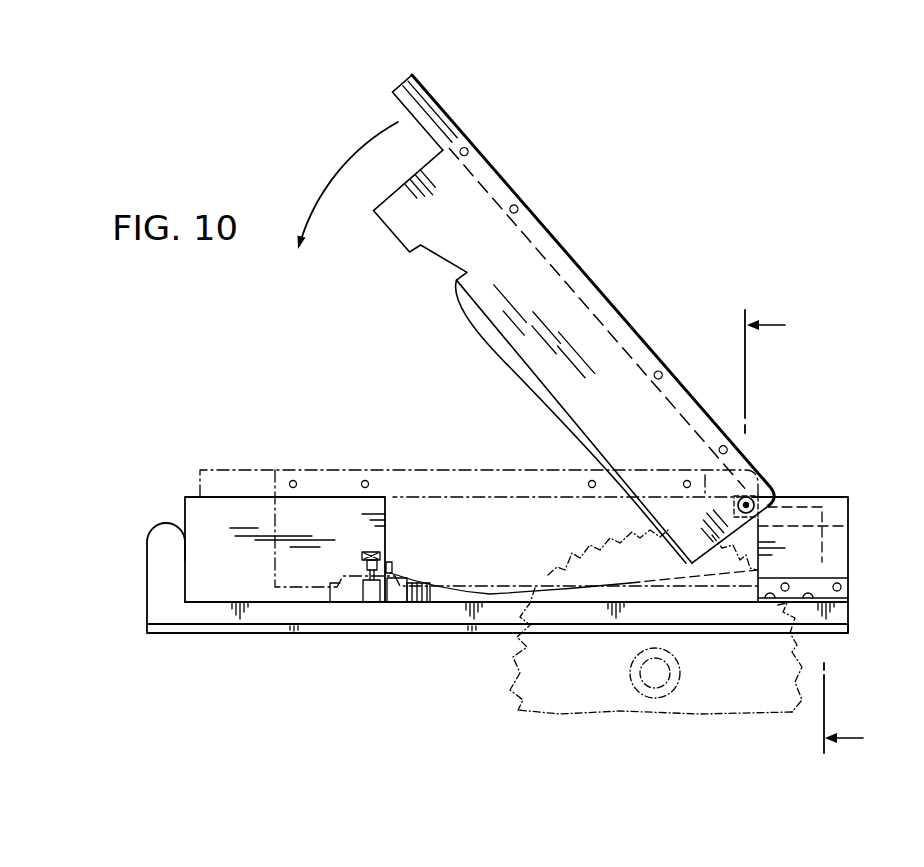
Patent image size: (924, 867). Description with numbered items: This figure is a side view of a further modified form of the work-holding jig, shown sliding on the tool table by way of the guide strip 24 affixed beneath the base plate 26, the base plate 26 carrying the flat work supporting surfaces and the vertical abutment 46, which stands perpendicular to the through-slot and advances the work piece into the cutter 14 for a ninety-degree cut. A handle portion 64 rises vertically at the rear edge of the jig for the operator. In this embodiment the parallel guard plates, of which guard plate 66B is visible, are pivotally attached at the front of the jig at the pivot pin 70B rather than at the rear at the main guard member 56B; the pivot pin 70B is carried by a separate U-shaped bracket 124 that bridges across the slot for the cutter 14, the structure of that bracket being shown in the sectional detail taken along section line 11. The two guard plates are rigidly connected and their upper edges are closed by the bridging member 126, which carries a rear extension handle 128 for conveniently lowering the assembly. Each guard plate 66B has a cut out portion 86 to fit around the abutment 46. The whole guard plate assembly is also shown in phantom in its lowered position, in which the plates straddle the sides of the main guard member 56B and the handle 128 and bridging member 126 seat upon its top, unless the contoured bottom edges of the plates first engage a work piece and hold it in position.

The section line 11- 11 is at (815, 531).
The cutter 14 is at (515, 670).
The guide strip 24 is at (328, 628).
The base plate 26 is at (220, 615).
The vertical abutment 46 is at (390, 567).
The main guard member 56B is at (193, 512).
The handle portion 64 is at (157, 555).
The guard plate 66B is at (540, 290).
The pivot pin 70B is at (752, 494).
The cut out portion 86 is at (442, 262).
The U-shaped bracket 124 is at (827, 500).
The bridging member 126 is at (497, 187).
The rear extension handle 128 is at (438, 110).